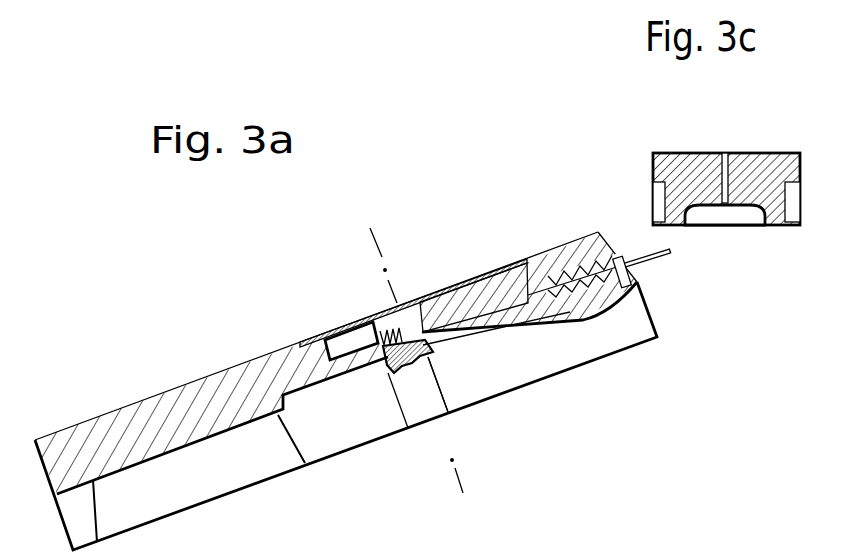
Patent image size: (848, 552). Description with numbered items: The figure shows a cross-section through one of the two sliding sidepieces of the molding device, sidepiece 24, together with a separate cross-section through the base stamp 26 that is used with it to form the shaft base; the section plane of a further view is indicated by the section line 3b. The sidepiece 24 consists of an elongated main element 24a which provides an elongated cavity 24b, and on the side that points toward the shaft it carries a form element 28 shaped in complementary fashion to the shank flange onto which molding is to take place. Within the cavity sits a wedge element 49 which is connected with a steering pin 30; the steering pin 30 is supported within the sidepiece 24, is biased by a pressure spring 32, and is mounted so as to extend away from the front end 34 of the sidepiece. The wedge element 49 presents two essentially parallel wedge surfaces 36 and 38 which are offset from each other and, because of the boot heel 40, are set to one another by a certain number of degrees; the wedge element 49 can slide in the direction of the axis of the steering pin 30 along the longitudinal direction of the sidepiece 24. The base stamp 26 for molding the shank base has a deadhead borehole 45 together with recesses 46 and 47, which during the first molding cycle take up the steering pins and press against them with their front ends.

In FIG. 3A, the sidepiece 24 is at (79, 415).
In FIG. 3A, the elongated main element 24a is at (162, 418).
In FIG. 3A, the elongated cavity 24b is at (347, 343).
In FIG. 3C, the base stamp 26 is at (682, 160).
In FIG. 3A, the form element 28 is at (405, 382).
In FIG. 3A, the steering pin 30 is at (673, 255).
In FIG. 3A, the pressure spring 32 is at (591, 250).
In FIG. 3A, the front end 34 is at (650, 310).
In FIG. 3A, the wedge surface 36 is at (468, 297).
In FIG. 3A, the wedge surface 38 is at (382, 328).
In FIG. 3A, the boot heel 40 is at (422, 303).
In FIG. 3C, the deadhead borehole 45 is at (725, 157).
In FIG. 3C, the recess 46 is at (792, 203).
In FIG. 3C, the recess 47 is at (663, 203).
In FIG. 3A, the wedge element 49 is at (508, 300).
In FIG. 3A, the section line 3b is at (419, 362).